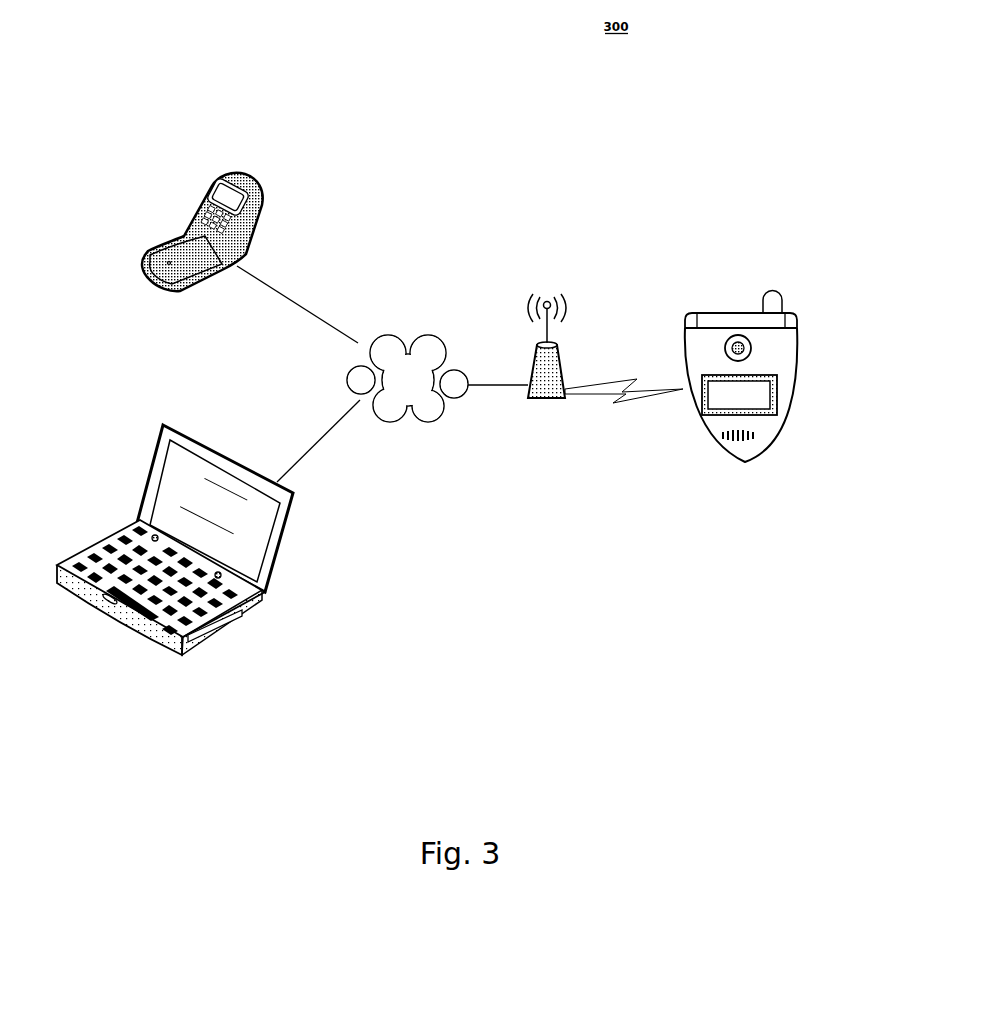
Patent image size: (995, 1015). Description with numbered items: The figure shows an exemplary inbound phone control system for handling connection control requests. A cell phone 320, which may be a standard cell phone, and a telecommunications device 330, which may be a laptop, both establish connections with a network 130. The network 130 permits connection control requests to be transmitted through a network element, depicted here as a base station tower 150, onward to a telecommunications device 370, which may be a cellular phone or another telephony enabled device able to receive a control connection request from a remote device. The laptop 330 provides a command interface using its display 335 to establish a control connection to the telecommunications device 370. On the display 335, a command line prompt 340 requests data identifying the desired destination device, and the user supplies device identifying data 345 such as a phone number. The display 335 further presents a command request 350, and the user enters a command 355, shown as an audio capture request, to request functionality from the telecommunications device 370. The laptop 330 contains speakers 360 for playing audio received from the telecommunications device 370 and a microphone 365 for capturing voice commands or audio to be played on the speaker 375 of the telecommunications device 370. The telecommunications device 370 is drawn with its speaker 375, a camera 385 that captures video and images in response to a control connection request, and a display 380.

The cell phone 320 is at (183, 293).
The network 130 is at (428, 422).
The base station 150 is at (550, 398).
The telecommunications device 370 is at (771, 406).
The camera 385 is at (752, 348).
The display 380 is at (777, 395).
The speaker 375 is at (755, 435).
The telecommunications device 330 is at (192, 563).
The display 335 is at (168, 448).
The command line prompt 340 is at (250, 507).
The device identifying data 345 is at (178, 482).
The command request 350 is at (247, 533).
The command 355 is at (160, 515).
The speaker 360 is at (155, 538).
The microphone 365 is at (110, 601).